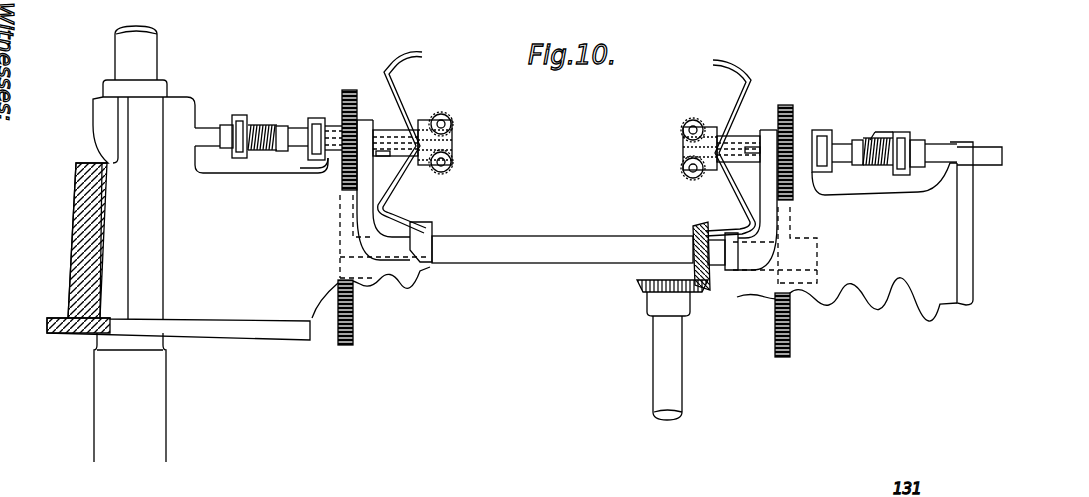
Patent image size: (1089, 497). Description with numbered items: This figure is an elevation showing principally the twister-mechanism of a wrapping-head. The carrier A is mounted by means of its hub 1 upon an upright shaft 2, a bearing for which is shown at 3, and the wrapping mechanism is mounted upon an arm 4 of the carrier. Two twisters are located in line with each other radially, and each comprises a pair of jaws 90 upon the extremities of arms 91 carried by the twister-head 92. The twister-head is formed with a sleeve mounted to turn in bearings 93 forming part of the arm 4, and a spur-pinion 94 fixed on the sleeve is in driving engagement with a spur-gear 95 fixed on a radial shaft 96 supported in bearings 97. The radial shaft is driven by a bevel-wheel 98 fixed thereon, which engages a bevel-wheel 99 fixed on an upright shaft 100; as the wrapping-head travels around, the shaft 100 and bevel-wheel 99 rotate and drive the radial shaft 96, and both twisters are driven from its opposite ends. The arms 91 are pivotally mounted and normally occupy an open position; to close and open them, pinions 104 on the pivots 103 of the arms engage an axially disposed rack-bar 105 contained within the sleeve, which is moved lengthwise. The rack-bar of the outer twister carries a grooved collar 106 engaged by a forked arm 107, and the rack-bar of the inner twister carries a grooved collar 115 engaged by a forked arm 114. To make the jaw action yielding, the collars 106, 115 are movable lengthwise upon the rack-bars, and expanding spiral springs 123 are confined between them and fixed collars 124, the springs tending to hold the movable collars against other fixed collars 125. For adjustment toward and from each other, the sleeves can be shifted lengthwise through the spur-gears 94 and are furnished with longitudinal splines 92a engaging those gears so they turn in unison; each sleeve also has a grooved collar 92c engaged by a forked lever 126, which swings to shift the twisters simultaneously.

The hub 1 is at (160, 203).
The upright shaft 2 is at (152, 52).
The bearing 3 is at (92, 407).
The arm 4 is at (614, 231).
The carrier A is at (93, 100).
The jaws 90 is at (422, 54).
The arms 91 is at (402, 102).
The twister-head 92 is at (385, 130).
The longitudinal splines 92a is at (392, 134).
The grooved collar 92c is at (317, 145).
The bearings 93 is at (330, 122).
The spur-pinion 94 is at (352, 90).
The spur-gear 95 is at (353, 337).
The radial shaft 96 is at (548, 237).
The bearings 97 is at (417, 243).
The bevel-wheel 98 is at (697, 228).
The bevel-wheel 99 is at (638, 290).
The upright shaft 100 is at (678, 383).
The pivots 103 is at (453, 135).
The pinions 104 is at (452, 116).
The rack-bar 105 is at (768, 90).
The grooved collar 106 is at (925, 138).
The forked arm 107 is at (908, 133).
The forked arm 114 is at (247, 114).
The grooved collar 115 is at (230, 118).
The expanding spiral springs 123 is at (263, 125).
The fixed collars 124 is at (283, 152).
The fixed collars 125 is at (228, 157).
The forked levers 126 is at (315, 117).